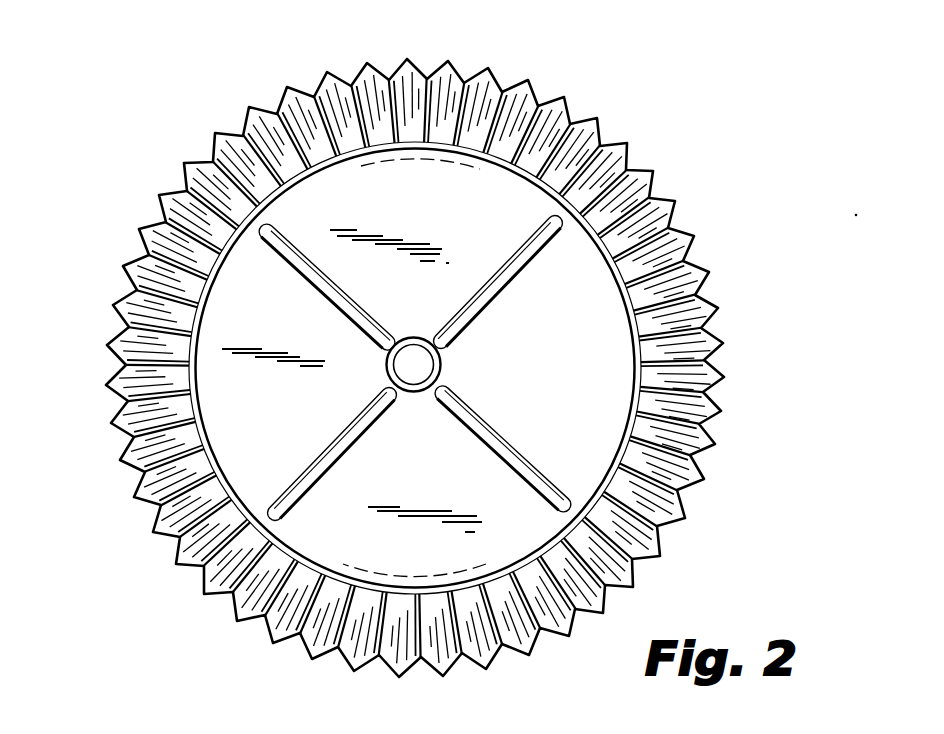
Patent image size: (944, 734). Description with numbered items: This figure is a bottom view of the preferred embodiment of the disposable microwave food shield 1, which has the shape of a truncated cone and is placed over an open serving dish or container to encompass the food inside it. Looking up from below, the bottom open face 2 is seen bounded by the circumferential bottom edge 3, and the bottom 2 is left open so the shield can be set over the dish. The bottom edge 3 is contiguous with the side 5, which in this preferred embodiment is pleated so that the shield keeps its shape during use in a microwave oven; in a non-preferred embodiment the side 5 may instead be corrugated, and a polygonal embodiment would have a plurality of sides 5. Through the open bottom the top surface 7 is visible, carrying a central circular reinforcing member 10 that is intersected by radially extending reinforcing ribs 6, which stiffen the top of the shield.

The food shield 1 is at (699, 192).
The bottom open face 2 is at (473, 197).
The circumferential bottom edge 3 is at (702, 489).
The side 5 is at (201, 291).
The reinforcing ribs 6 is at (353, 304).
The top surface 7 is at (412, 212).
The central circular reinforcing member 10 is at (441, 368).